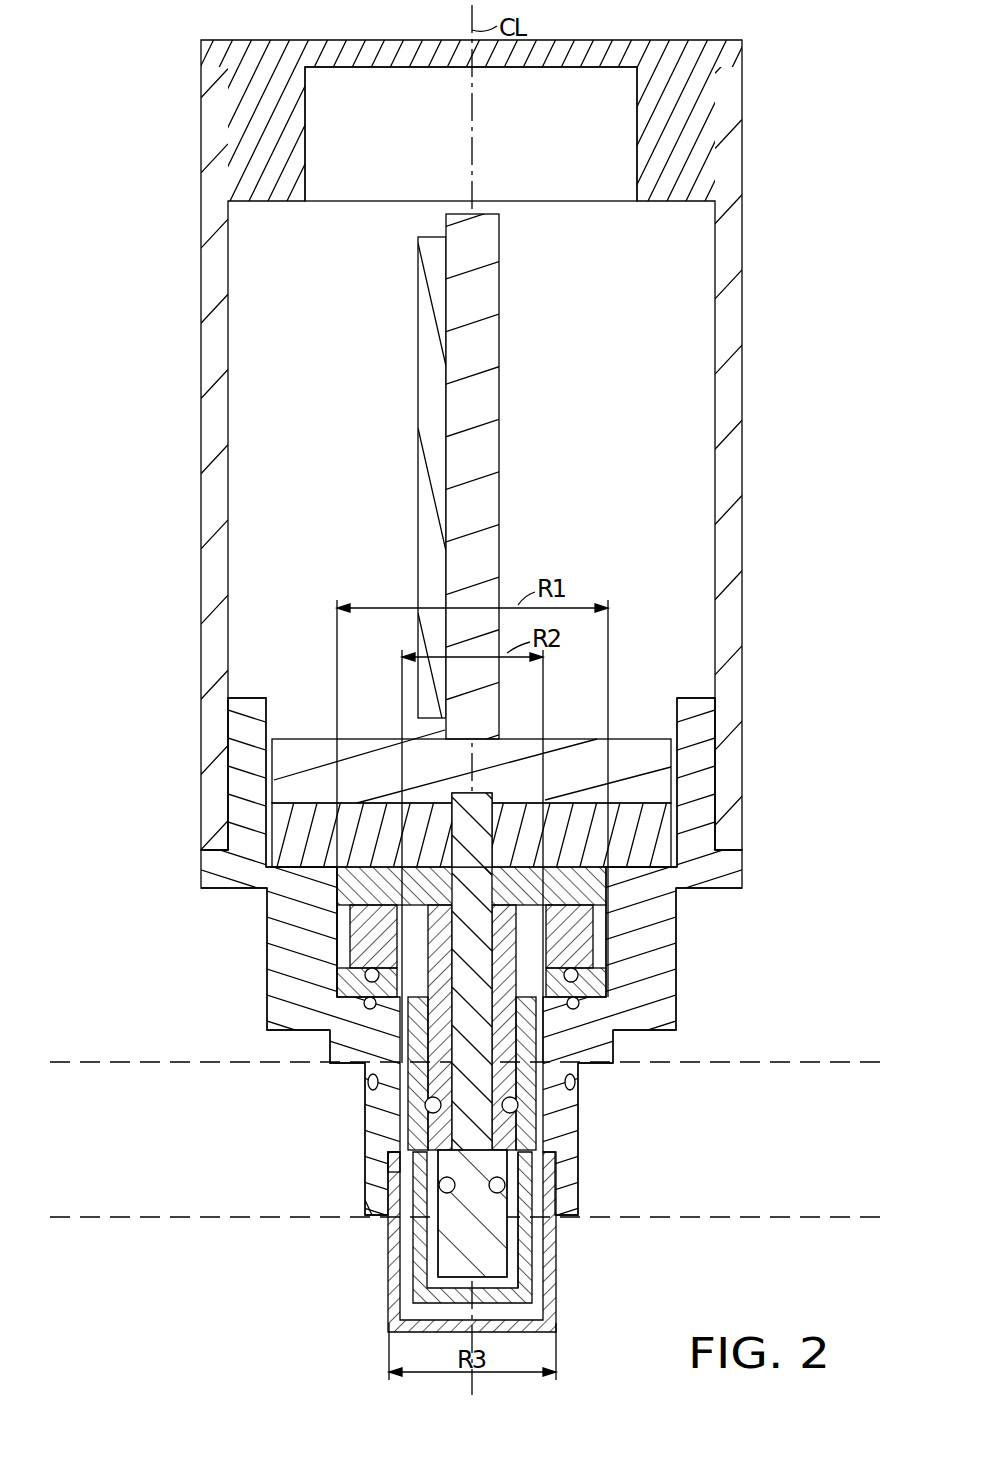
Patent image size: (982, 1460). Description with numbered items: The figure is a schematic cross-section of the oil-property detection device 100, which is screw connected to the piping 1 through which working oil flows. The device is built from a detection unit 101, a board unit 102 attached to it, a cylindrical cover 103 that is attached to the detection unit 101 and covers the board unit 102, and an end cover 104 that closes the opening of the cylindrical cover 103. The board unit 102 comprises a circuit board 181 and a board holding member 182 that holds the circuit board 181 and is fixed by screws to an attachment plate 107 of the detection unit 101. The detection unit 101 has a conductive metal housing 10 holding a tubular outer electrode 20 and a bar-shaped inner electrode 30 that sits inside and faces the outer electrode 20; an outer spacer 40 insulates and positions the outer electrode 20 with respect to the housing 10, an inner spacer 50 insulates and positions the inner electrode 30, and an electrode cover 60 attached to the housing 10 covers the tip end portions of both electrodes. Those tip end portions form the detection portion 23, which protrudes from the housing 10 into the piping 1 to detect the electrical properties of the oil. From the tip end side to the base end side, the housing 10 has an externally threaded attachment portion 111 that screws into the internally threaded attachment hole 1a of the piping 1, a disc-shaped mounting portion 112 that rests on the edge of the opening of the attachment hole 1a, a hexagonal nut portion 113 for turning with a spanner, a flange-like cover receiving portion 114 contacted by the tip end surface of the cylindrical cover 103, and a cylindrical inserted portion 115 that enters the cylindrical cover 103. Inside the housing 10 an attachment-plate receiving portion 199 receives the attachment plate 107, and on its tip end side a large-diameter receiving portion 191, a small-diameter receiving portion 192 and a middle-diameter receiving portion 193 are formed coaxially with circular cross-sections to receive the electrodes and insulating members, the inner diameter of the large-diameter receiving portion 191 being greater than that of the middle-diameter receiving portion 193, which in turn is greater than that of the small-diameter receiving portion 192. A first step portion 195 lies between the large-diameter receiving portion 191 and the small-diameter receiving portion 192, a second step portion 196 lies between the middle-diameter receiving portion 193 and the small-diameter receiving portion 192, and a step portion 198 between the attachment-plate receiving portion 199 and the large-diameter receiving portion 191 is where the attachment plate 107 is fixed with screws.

The piping 1 is at (136, 1061).
The attachment hole 1a is at (382, 1217).
The housing 10 is at (678, 982).
The outer electrode 20 is at (527, 1288).
The detection portion 23 is at (523, 1235).
The inner electrode 30 is at (503, 1257).
The outer spacer 40 is at (577, 1082).
The inner spacer 50 is at (513, 1200).
The electrode cover 60 is at (555, 1325).
The oil-property detection device 100 is at (159, 65).
The detection unit 101 is at (245, 967).
The board unit 102 is at (375, 392).
The cylindrical cover 103 is at (460, 445).
The end cover 104 is at (274, 202).
The attachment plate 107 is at (672, 802).
The attachment portion 111 is at (365, 1178).
The mounting portion 112 is at (332, 1044).
The nut portion 113 is at (266, 988).
The cover receiving portion 114 is at (201, 858).
The inserted portion 115 is at (255, 698).
The circuit board 181 is at (418, 445).
The board holding member 182 is at (499, 457).
The large-diameter receiving portion 191 is at (607, 918).
The small-diameter receiving portion 192 is at (543, 1042).
The middle-diameter receiving portion 193 is at (558, 1158).
The first step portion 195 is at (580, 982).
The second step portion 196 is at (388, 1162).
The step portion 198 is at (653, 853).
The attachment-plate receiving portion 199 is at (678, 700).